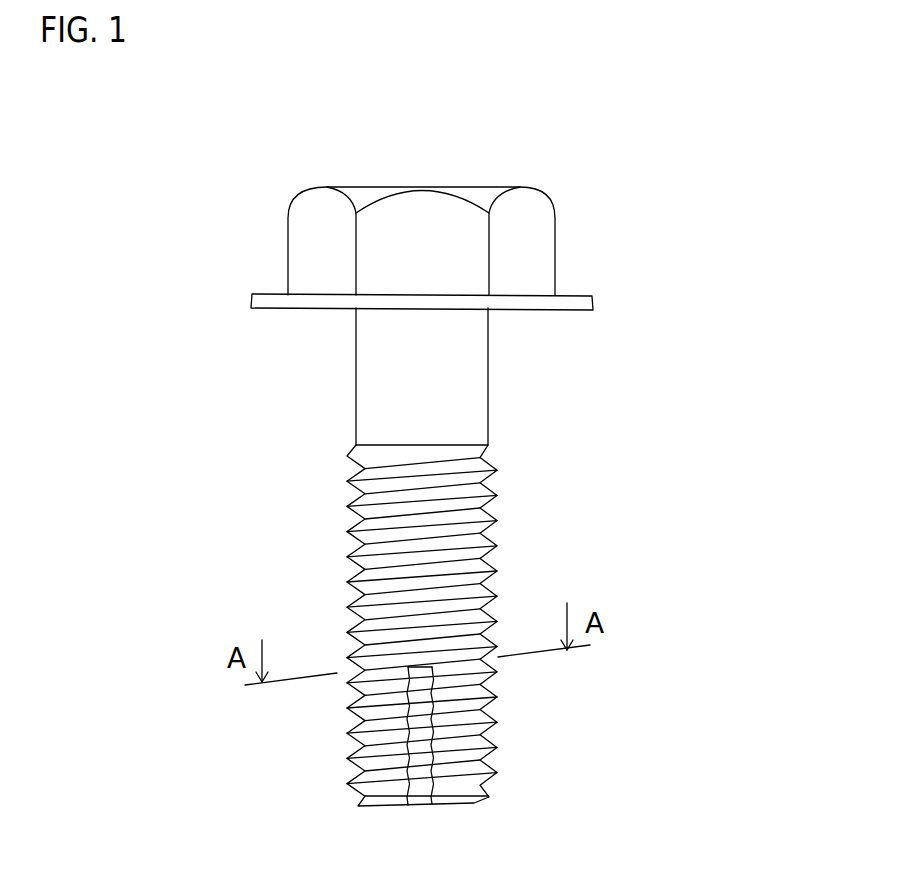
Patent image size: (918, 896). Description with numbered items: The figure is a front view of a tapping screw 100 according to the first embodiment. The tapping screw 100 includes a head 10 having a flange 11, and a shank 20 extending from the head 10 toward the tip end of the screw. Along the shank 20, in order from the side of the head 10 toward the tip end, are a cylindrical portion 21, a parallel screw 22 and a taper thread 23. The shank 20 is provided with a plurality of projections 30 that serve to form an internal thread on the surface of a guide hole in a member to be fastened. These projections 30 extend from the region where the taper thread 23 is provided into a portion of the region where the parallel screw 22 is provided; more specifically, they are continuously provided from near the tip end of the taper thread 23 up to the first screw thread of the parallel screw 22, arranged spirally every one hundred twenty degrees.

The tapping screw 100 is at (705, 195).
The head 10 is at (258, 170).
The flange 11 is at (252, 292).
The shank 20 is at (237, 572).
The cylindrical portion 21 is at (514, 315).
The parallel screw 22 is at (514, 680).
The taper thread 23 is at (514, 688).
The projections 30 is at (408, 790).